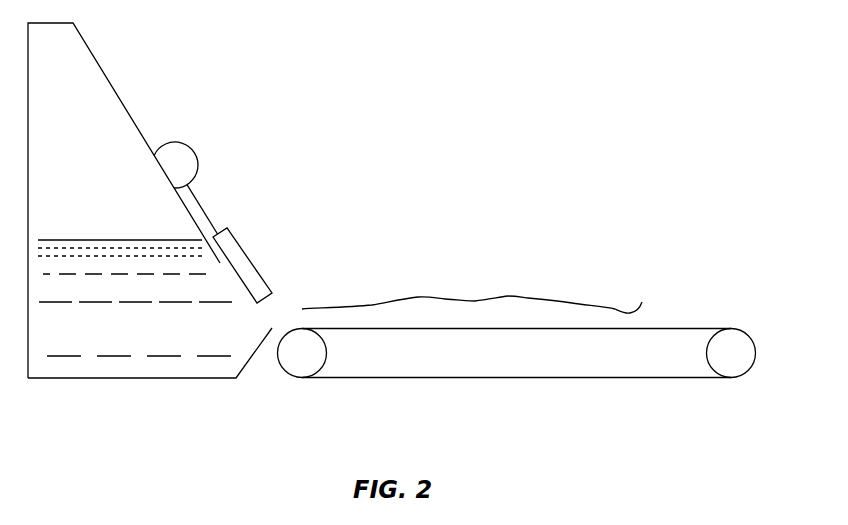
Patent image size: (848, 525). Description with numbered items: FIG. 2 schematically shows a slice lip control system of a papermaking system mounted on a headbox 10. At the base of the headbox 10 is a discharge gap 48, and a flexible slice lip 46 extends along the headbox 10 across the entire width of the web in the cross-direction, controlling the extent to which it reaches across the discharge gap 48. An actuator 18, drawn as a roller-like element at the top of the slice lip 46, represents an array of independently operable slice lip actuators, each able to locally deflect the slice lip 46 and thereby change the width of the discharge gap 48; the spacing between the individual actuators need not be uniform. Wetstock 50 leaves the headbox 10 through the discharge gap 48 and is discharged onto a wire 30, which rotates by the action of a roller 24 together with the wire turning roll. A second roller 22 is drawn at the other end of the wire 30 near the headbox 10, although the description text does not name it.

The headbox 10 is at (82, 378).
The actuator 18 is at (180, 142).
The first conveyor roller 22 is at (307, 378).
The roller 24 is at (730, 377).
The wire 30 is at (438, 329).
The flexible slice lip 46 is at (248, 257).
The discharge gap 48 is at (254, 327).
The wetstock 50 is at (527, 298).